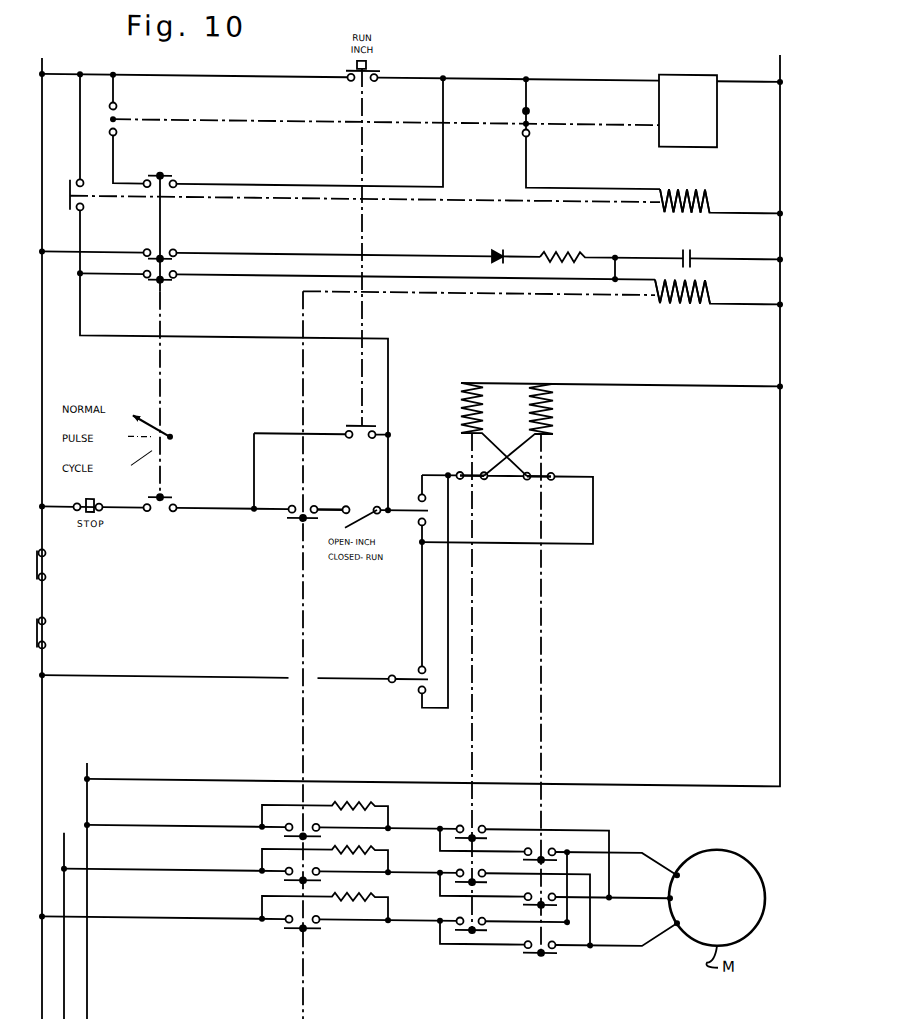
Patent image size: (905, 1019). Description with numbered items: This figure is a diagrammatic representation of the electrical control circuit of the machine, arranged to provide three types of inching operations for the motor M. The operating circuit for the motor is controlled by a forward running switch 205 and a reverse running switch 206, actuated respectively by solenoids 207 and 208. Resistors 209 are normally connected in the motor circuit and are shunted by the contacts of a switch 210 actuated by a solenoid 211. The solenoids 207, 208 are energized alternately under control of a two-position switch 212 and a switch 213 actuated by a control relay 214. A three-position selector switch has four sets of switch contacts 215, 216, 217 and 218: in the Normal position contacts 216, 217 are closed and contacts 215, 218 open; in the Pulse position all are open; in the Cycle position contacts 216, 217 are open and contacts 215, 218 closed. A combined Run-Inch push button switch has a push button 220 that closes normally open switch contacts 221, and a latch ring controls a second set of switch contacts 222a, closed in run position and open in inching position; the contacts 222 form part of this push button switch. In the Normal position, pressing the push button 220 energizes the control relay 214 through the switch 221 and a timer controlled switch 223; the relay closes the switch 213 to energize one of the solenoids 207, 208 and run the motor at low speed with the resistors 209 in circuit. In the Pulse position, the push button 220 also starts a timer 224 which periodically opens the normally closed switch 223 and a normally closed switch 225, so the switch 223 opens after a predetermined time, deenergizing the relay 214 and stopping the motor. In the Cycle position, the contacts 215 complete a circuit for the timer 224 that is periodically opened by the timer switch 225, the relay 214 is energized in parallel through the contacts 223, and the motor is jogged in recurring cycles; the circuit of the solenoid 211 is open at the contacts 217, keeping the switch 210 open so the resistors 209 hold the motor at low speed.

The forward running switch 205 is at (472, 938).
The reverse running switch 206 is at (552, 960).
The solenoid 207 is at (462, 393).
The solenoid 208 is at (550, 412).
The resistors 209 is at (358, 802).
The switch 210 is at (297, 938).
The solenoid 211 is at (684, 298).
The two-position switch 212 is at (409, 483).
The switch 213 is at (86, 207).
The control relay 214 is at (690, 191).
The switch contacts 215 is at (180, 176).
The switch contacts 216 is at (182, 249).
The switch contacts 217 is at (180, 282).
The switch contacts 218 is at (166, 520).
The push button 220 is at (348, 66).
The switch contacts 221 is at (384, 68).
The inch switch contacts 222 is at (365, 440).
The switch contacts 222a is at (366, 503).
The timer controlled switch 223 is at (534, 111).
The timer 224 is at (700, 80).
The normally closed switch 225 is at (131, 106).